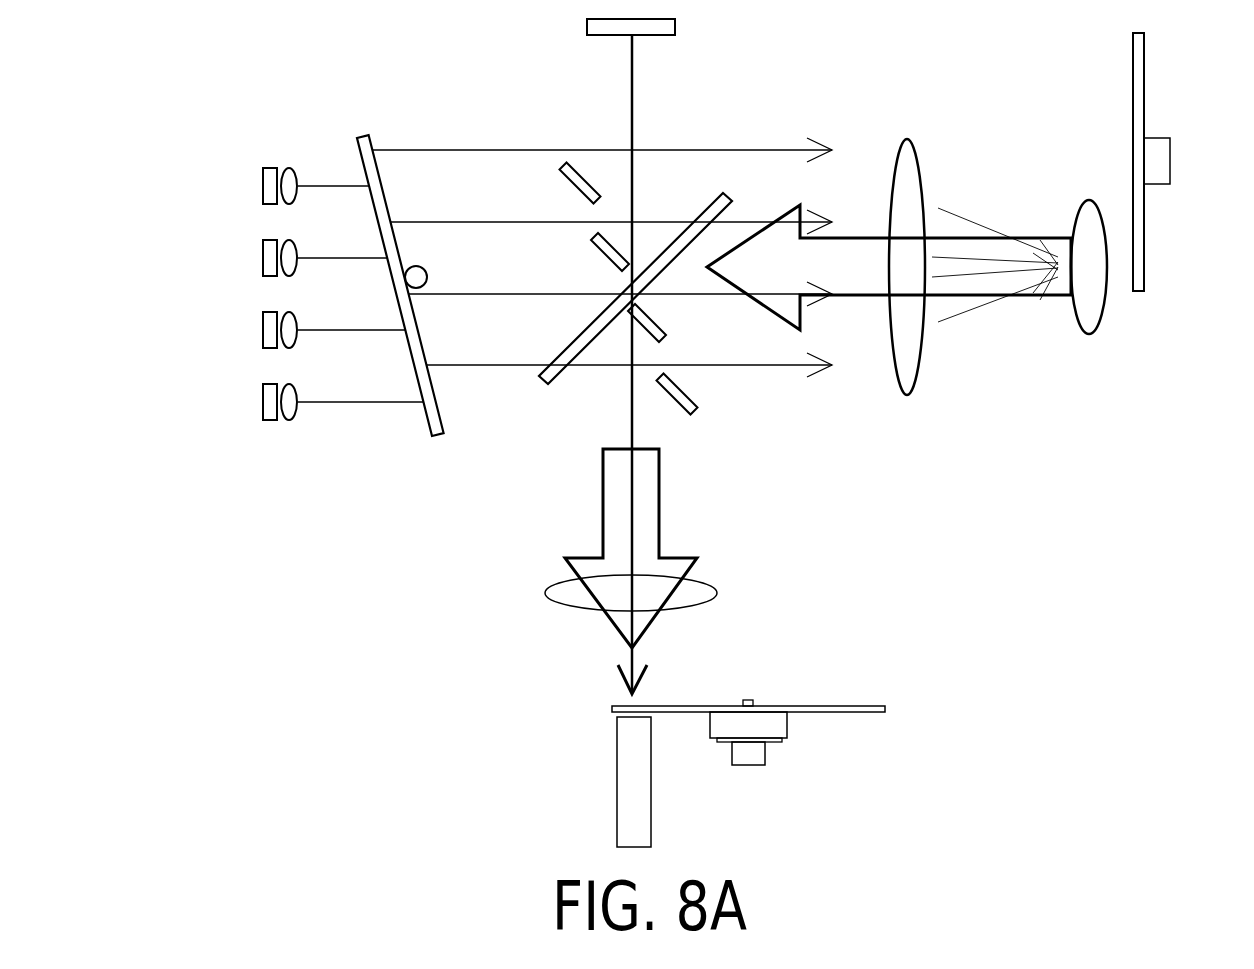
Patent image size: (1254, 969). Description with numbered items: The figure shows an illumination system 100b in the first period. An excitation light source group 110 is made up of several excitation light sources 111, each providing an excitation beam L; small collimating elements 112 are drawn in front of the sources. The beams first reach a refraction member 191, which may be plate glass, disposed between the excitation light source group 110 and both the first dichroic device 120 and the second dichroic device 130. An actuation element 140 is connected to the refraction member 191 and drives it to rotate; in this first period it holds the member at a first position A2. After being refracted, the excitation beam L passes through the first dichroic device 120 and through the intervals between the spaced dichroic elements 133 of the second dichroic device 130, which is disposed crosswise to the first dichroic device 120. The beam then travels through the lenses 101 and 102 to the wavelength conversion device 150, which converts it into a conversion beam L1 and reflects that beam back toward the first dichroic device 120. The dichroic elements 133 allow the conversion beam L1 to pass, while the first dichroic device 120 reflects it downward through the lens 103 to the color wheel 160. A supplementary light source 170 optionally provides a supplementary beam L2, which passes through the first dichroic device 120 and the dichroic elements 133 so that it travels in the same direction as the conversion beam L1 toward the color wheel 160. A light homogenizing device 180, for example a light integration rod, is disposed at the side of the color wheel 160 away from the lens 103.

The illumination system 100b is at (230, 103).
The excitation light source group 110 is at (250, 317).
The excitation light source 111 is at (263, 190).
The collimating lens 112 is at (293, 168).
The excitation beam L is at (333, 186).
The refraction member 191 is at (370, 140).
The first position A2 is at (358, 136).
The actuation element 140 is at (425, 276).
The supplementary light source 170 is at (676, 27).
The supplementary beam L2 is at (632, 80).
The dichroic element 133 is at (577, 170).
The first dichroic device 120 is at (727, 195).
The second dichroic device 130 is at (700, 418).
The conversion beam L1 is at (1062, 236).
The lens 101 is at (908, 142).
The lens 102 is at (1088, 310).
The wavelength conversion device 150 is at (1140, 62).
The lens 103 is at (700, 597).
The color wheel 160 is at (845, 712).
The light homogenizing device 180 is at (640, 775).